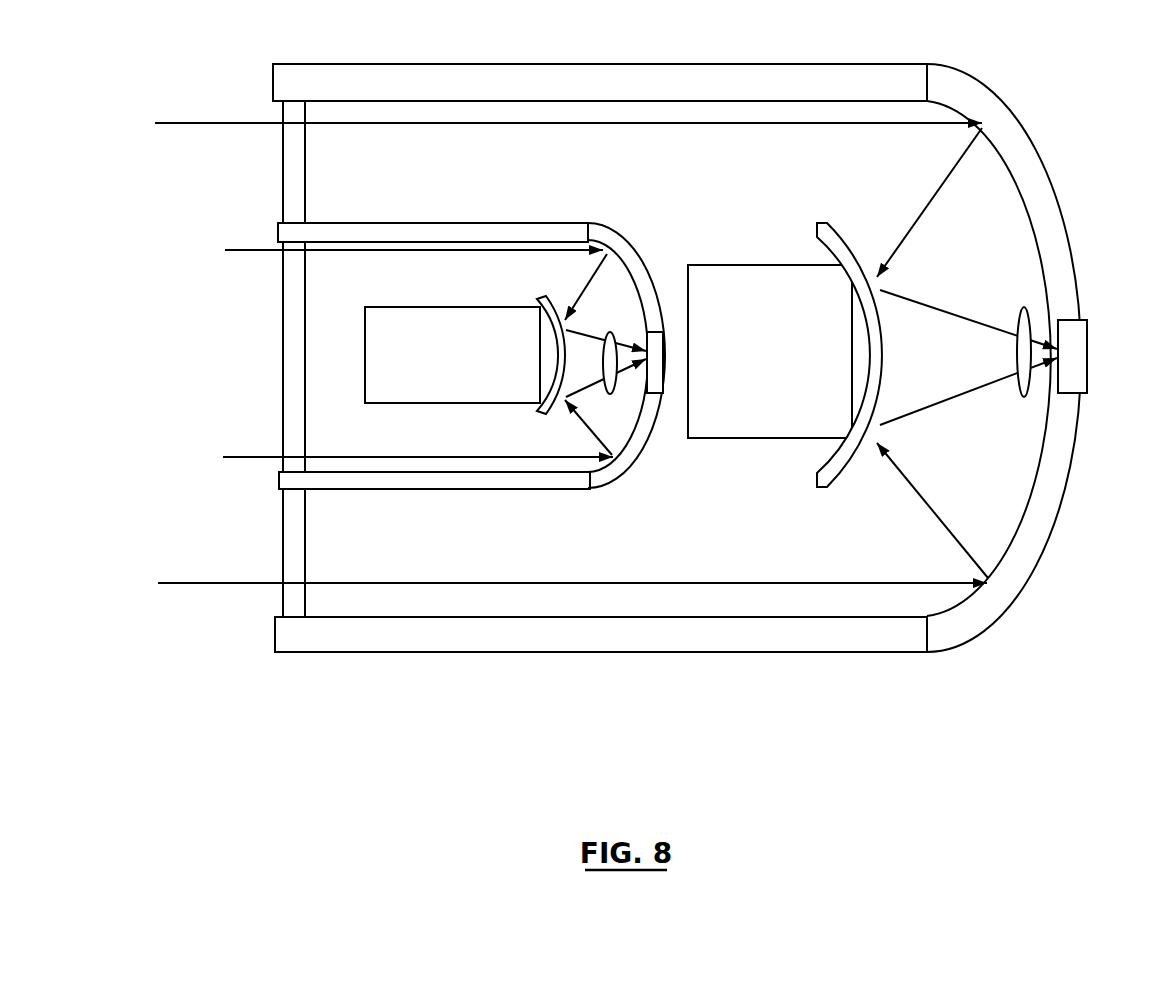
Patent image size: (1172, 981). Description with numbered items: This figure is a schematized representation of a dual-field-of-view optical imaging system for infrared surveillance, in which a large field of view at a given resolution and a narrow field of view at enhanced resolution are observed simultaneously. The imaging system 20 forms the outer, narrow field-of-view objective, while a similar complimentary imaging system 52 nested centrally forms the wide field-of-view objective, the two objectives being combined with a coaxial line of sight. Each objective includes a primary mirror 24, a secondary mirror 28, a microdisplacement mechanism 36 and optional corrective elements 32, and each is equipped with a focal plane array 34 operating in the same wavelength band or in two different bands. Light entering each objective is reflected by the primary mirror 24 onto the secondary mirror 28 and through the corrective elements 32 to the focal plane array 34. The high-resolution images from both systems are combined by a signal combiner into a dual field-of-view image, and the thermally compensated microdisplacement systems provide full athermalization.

The imaging system 20 is at (1030, 84).
The primary mirror 24 is at (617, 465).
The secondary mirror 28 is at (543, 295).
The corrective elements 32 is at (618, 345).
The focal plane array 34 is at (663, 393).
The microdisplacement mechanism 36 is at (440, 365).
The complimentary imaging system 52 is at (482, 196).